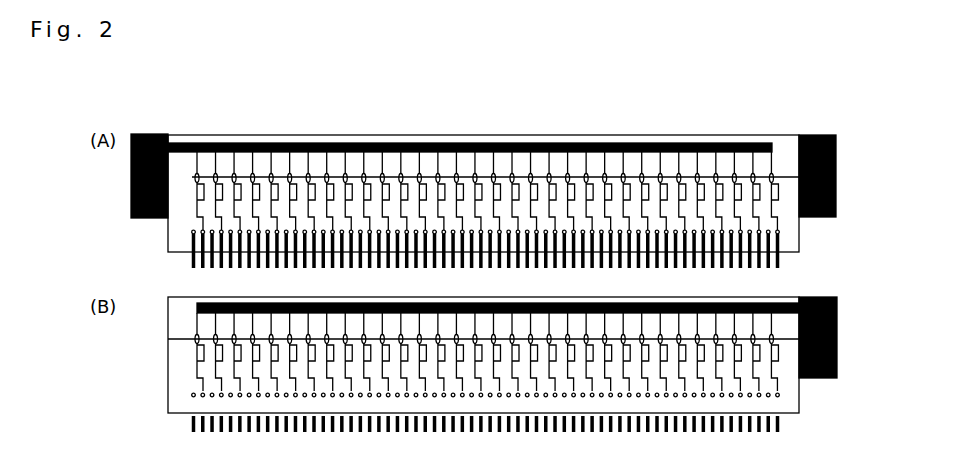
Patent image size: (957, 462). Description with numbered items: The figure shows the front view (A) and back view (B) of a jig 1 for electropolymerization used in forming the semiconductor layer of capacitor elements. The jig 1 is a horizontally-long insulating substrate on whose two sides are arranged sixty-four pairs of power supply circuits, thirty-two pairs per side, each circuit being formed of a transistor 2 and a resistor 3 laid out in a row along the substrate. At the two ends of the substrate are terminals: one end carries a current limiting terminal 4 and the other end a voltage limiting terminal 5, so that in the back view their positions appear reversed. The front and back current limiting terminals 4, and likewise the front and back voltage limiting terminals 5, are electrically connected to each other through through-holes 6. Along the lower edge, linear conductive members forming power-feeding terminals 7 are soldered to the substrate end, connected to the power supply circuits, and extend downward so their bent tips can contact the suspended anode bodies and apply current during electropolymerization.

The jig for electropolymerization 1 is at (531, 135).
The transistor 2 is at (772, 202).
The resistor 3 is at (772, 180).
The current limiting terminal 4 is at (132, 183).
The voltage limiting terminal 5 is at (799, 177).
The through-hole 6 is at (833, 137).
The power-feeding terminal 7 is at (192, 262).